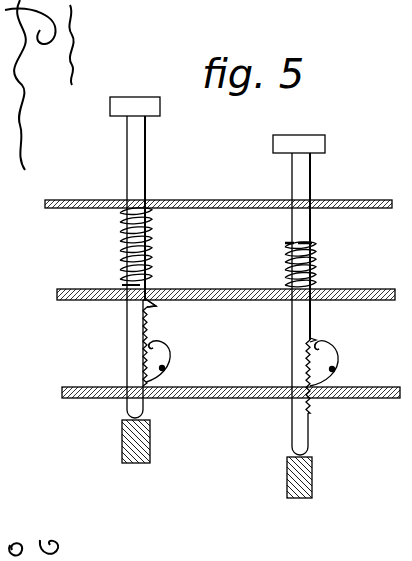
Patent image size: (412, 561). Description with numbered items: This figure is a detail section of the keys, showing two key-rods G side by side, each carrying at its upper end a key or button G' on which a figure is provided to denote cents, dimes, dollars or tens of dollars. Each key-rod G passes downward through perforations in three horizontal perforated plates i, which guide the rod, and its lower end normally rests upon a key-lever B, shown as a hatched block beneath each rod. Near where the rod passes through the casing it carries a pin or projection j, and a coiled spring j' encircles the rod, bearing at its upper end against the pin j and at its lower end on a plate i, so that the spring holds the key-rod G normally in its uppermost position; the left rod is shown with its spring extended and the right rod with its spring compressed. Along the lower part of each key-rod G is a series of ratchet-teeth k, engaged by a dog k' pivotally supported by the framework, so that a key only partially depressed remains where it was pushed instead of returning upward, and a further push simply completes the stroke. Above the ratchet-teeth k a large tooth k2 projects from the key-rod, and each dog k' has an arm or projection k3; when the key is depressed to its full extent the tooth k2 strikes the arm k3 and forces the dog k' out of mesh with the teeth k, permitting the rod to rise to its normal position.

The key-rod G is at (147, 267).
The key or button G' is at (221, 268).
The perforated plate i is at (247, 300).
The pin or projection j is at (119, 246).
The coiled spring j' is at (247, 256).
The ratchet-teeth k is at (224, 360).
The dog k' is at (257, 363).
The large tooth k2 is at (152, 303).
The arm or projection k3 is at (158, 343).
The key-lever B is at (150, 442).